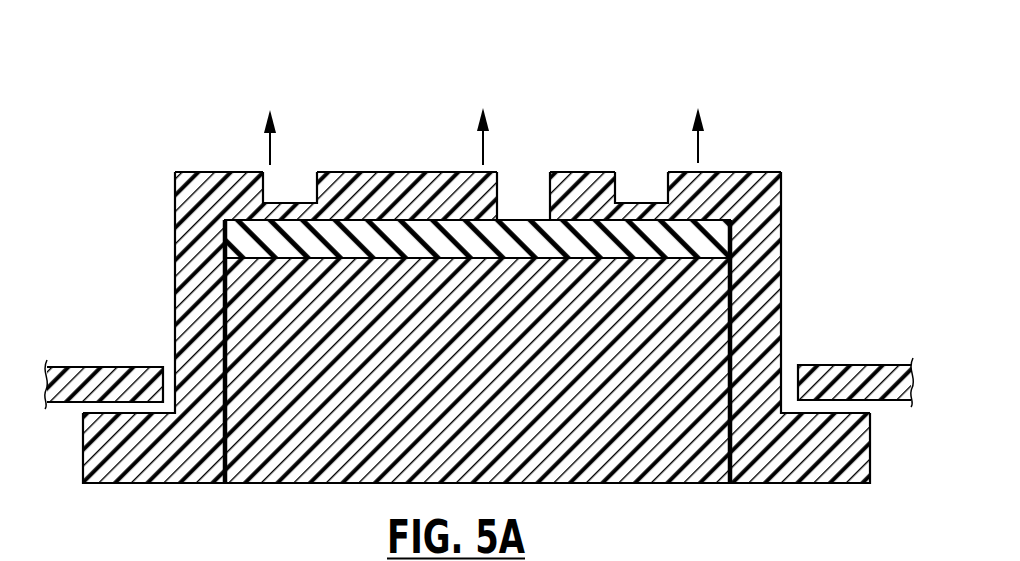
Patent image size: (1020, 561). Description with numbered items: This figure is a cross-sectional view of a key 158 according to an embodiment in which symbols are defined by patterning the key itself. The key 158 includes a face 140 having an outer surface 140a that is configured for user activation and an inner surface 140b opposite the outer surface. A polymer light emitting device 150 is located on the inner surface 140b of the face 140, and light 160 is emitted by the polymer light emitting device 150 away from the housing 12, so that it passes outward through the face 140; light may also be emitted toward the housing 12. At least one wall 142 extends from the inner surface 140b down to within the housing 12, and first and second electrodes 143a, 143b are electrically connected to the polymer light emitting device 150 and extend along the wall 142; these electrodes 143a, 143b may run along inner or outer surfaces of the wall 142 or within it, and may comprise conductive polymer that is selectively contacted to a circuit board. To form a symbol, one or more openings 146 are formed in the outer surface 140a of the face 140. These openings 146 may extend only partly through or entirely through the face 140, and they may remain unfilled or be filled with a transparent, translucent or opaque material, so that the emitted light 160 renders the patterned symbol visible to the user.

The housing 12 is at (125, 396).
The face 140 is at (476, 297).
The outer surface 140a is at (359, 169).
The inner surface 140b is at (363, 260).
The wall 142 is at (195, 318).
The first electrode 143a is at (228, 385).
The second electrode 143b is at (702, 402).
The openings 146 is at (288, 190).
The polymer light emitting device 150 is at (458, 250).
The key 158 is at (808, 128).
The light 160 is at (490, 119).